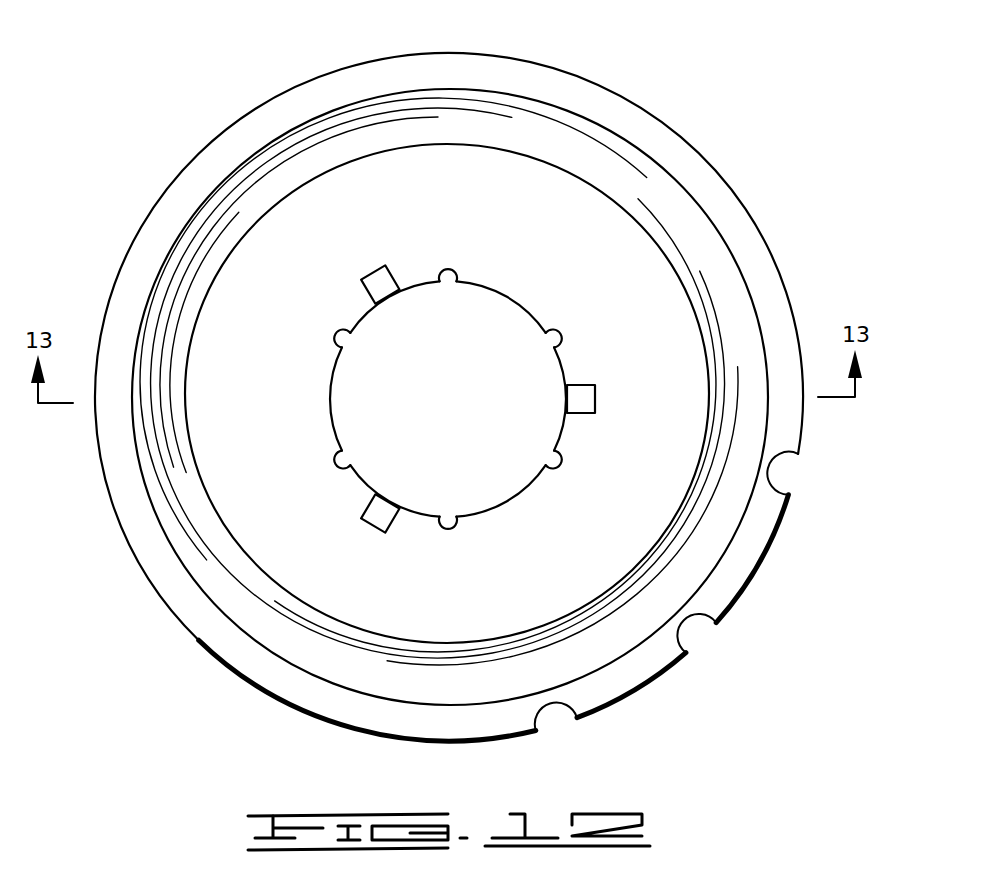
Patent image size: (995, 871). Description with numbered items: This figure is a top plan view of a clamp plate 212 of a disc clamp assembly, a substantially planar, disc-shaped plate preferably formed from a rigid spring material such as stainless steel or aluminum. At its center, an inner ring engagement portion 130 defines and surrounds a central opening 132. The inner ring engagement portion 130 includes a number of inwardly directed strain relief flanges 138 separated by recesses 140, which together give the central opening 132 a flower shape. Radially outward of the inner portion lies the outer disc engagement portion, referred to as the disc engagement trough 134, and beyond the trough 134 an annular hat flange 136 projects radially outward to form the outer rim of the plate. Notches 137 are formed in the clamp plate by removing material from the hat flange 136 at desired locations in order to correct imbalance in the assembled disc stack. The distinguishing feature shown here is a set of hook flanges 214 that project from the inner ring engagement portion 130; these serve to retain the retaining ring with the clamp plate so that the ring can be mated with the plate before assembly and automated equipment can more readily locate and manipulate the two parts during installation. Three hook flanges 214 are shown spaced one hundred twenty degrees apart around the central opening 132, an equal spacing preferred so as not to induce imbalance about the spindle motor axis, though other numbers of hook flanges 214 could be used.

The clamp plate 212 is at (250, 58).
The inner ring engagement portion 130 is at (312, 347).
The central opening 132 is at (448, 380).
The disc engagement trough 134 is at (198, 522).
The annular hat flange 136 is at (205, 640).
The notches 137 is at (812, 473).
The strain relief flanges 138 is at (330, 398).
The recesses 140 is at (337, 462).
The hook flanges 214 is at (366, 274).